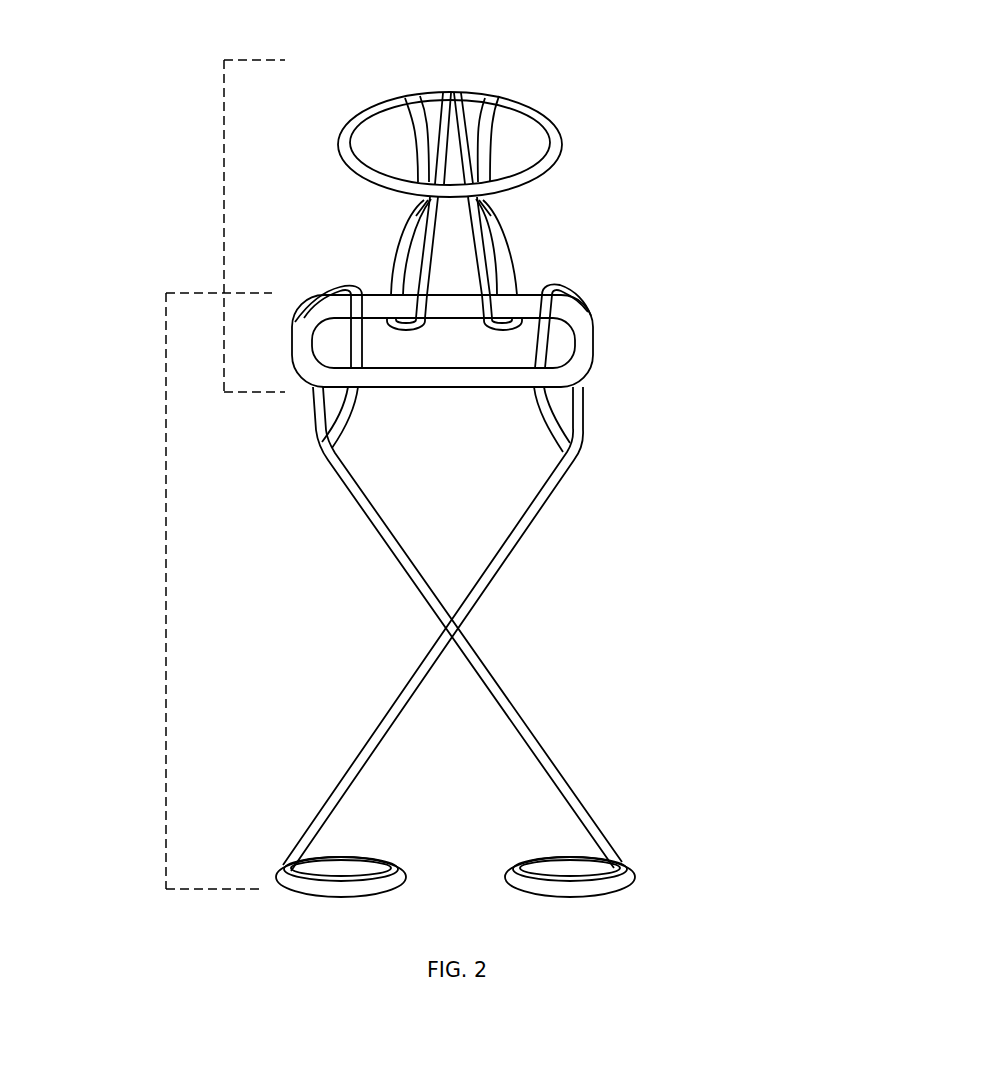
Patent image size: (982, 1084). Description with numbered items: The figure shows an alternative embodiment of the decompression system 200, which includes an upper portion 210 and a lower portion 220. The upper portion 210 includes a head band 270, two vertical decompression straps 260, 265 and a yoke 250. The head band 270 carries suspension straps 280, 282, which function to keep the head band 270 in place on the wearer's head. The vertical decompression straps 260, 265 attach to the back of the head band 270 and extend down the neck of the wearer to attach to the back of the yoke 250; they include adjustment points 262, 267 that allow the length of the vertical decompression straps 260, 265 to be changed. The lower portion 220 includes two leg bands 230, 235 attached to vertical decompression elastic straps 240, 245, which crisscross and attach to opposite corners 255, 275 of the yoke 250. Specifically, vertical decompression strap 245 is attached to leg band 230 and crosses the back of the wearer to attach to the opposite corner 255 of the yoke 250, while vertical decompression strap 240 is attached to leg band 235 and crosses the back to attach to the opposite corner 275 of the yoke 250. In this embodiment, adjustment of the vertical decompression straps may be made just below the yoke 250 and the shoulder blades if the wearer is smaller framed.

The system 200 is at (747, 160).
The upper portion 210 is at (215, 158).
The lower portion 220 is at (158, 548).
The leg band 230 is at (287, 867).
The leg band 235 is at (630, 871).
The vertical decompression elastic strap 240 is at (382, 543).
The vertical decompression elastic strap 245 is at (513, 553).
The yoke 250 is at (592, 348).
The corner of the yoke 255 is at (578, 298).
The vertical decompression strap 260 is at (440, 127).
The adjustment point 262 is at (417, 215).
The vertical decompression strap 265 is at (468, 128).
The adjustment point 267 is at (485, 210).
The head band 270 is at (533, 110).
The corner of the yoke 275 is at (340, 283).
The suspension strap 280 is at (415, 133).
The suspension strap 282 is at (495, 112).